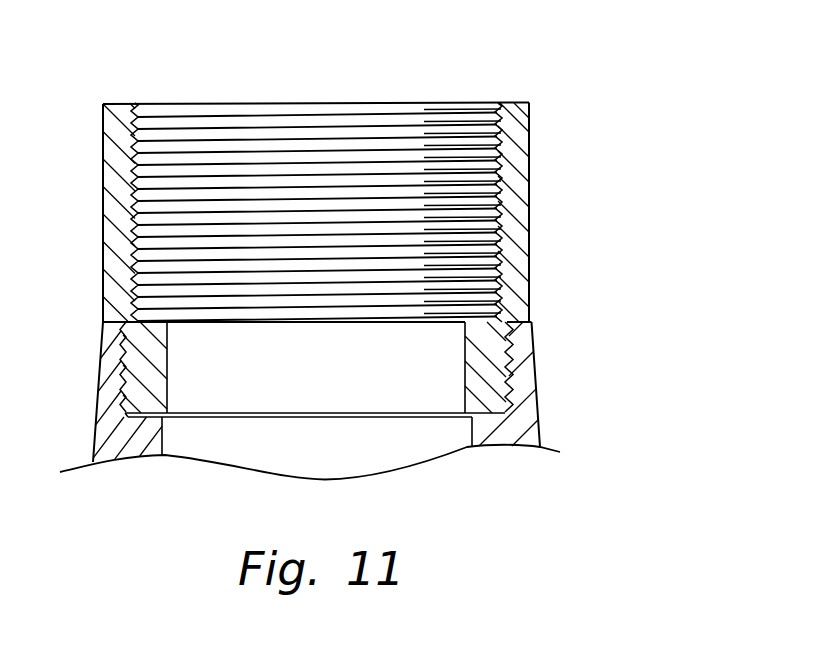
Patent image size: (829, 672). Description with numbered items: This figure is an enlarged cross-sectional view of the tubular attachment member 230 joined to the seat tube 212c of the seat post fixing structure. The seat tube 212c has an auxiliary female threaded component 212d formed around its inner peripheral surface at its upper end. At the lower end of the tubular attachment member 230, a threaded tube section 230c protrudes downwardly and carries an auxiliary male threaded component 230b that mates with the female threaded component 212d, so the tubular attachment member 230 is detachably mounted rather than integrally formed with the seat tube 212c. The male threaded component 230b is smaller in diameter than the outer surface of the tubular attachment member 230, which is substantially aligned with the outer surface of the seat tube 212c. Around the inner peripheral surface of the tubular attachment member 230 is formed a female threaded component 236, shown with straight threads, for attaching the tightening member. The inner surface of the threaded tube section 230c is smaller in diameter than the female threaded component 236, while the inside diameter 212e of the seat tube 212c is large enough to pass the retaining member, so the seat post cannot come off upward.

The tubular attachment member 230 is at (558, 207).
The female threaded component 236 is at (497, 150).
The attachment male threaded component 230b is at (509, 350).
The threaded tube section 230c is at (478, 361).
The attachment female threaded component 212d is at (510, 378).
The seat tube 212c is at (515, 435).
The inside diameter of the seat tube 212e is at (470, 431).